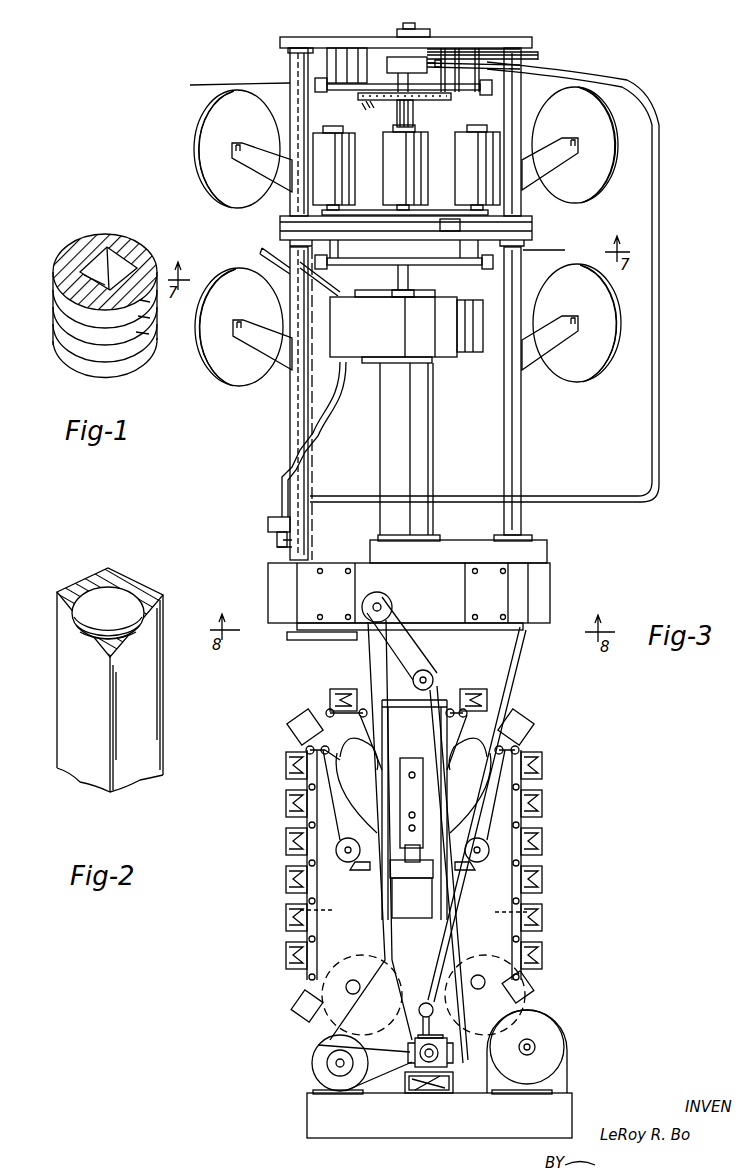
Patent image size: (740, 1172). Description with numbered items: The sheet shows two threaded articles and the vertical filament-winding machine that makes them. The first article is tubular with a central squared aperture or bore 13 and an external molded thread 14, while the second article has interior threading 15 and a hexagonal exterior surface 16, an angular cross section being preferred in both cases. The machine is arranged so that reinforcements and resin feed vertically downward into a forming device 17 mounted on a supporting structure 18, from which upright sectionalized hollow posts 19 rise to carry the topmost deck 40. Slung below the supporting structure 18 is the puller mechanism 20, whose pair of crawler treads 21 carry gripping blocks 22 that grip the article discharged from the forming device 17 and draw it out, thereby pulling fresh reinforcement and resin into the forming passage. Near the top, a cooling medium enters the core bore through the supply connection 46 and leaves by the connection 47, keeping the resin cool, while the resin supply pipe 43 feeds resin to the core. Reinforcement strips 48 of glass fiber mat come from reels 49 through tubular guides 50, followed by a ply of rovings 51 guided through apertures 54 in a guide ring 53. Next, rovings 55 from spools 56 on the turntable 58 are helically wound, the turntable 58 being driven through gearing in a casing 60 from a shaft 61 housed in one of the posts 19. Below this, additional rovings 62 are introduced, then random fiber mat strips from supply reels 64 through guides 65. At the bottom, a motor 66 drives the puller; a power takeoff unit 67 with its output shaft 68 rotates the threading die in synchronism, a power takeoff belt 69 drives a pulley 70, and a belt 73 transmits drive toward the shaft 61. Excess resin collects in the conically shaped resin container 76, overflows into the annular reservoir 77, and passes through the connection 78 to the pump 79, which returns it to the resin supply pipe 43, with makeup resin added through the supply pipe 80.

In FIG. 1, the central squared aperture or bore 13 is at (118, 262).
In FIG. 1, the external molded thread 14 is at (58, 328).
In FIG. 2, the interior threading 15 is at (120, 598).
In FIG. 2, the hexagonal exterior surface 16 is at (160, 722).
In FIG. 3, the forming device 17 is at (448, 480).
In FIG. 3, the supporting structure 18 is at (545, 595).
In FIG. 3, the upright sectionalized hollow posts 19 is at (290, 205).
In FIG. 3, the puller mechanism 20 is at (563, 774).
In FIG. 3, the crawler treads 21 is at (320, 882).
In FIG. 3, the gripping blocks 22 is at (285, 845).
In FIG. 3, the topmost deck 40 is at (290, 38).
In FIG. 3, the resin supply pipe 43 is at (660, 310).
In FIG. 3, the cooling medium supply connection 46 is at (420, 30).
In FIG. 3, the cooling medium withdrawal connection 47 is at (540, 55).
In FIG. 3, the reinforcement strips 48 is at (275, 95).
In FIG. 3, the reels 49 is at (192, 145).
In FIG. 3, the tubular guides 50 is at (360, 45).
In FIG. 3, the rovings 51 is at (343, 98).
In FIG. 3, the guide ring 53 is at (422, 108).
In FIG. 3, the guide apertures 54 is at (392, 101).
In FIG. 3, the helically wound rovings 55 is at (370, 165).
In FIG. 3, the spools 56 is at (345, 160).
In FIG. 3, the turntable 58 is at (438, 209).
In FIG. 3, the casing 60 is at (280, 231).
In FIG. 3, the shaft 61 is at (295, 437).
In FIG. 3, the additional rovings 62 is at (258, 252).
In FIG. 3, the supply reels 64 is at (210, 384).
In FIG. 3, the guides 65 is at (378, 268).
In FIG. 3, the motor 66 is at (312, 1060).
In FIG. 3, the power takeoff unit 67 is at (408, 1068).
In FIG. 3, the output shaft 68 is at (515, 675).
In FIG. 3, the power takeoff belt 69 is at (372, 797).
In FIG. 3, the pulley 70 is at (370, 593).
In FIG. 3, the belt 73 is at (333, 640).
In FIG. 3, the conically shaped resin container 76 is at (440, 290).
In FIG. 3, the annular reservoir or chamber 77 is at (455, 360).
In FIG. 3, the connection 78 is at (325, 424).
In FIG. 3, the pump 79 is at (262, 522).
In FIG. 3, the makeup resin supply pipe 80 is at (332, 296).